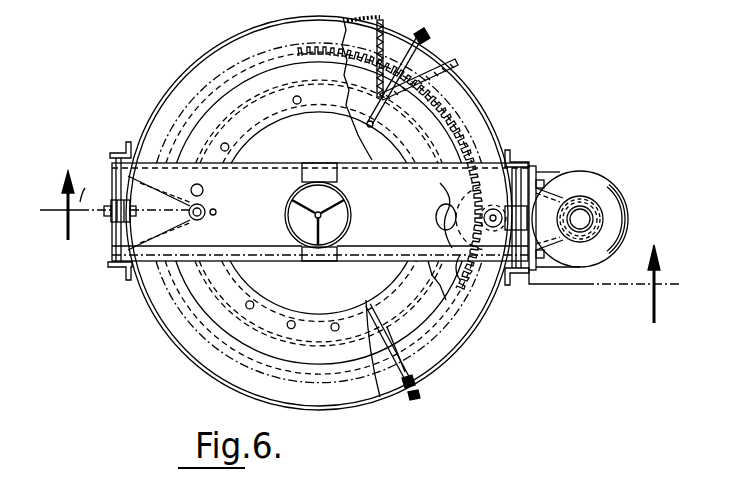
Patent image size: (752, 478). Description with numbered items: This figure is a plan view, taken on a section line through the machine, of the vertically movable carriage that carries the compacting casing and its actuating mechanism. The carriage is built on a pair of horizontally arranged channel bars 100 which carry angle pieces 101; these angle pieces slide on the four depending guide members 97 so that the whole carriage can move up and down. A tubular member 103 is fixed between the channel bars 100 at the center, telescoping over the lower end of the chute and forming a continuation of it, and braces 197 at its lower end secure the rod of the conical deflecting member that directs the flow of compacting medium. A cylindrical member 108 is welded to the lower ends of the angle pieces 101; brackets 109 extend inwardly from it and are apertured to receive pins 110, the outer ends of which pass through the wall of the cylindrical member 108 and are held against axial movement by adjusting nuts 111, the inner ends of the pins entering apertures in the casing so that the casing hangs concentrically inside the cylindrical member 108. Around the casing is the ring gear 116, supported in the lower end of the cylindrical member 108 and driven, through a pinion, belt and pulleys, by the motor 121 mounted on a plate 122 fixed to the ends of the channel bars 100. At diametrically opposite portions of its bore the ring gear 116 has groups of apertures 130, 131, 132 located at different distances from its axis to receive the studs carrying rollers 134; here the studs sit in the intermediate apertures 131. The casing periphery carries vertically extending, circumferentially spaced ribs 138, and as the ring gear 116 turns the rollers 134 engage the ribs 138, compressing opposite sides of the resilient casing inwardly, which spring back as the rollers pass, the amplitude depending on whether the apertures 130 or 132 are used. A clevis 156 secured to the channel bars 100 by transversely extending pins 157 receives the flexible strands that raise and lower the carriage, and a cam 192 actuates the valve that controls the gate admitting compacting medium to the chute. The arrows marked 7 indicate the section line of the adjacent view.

The section line 7- 7 is at (360, 247).
The guide member 97 is at (124, 150).
The channel bar 100 is at (250, 176).
The angle piece 101 is at (137, 270).
The tubular member 103 is at (352, 210).
The cylindrical member 108 is at (425, 360).
The bracket 109 is at (428, 62).
The pin 110 is at (398, 92).
The adjusting nut 111 is at (428, 40).
The ring gear 116 is at (445, 145).
The motor 121 is at (598, 188).
The plate 122 is at (538, 172).
The aperture 130 is at (466, 147).
The aperture 131 is at (445, 213).
The aperture 132 is at (454, 262).
The roller 134 is at (198, 209).
The rib 138 is at (264, 96).
The clevis 156 is at (108, 232).
The pin 157 is at (113, 248).
The cam 192 is at (261, 330).
The brace 197 is at (314, 242).